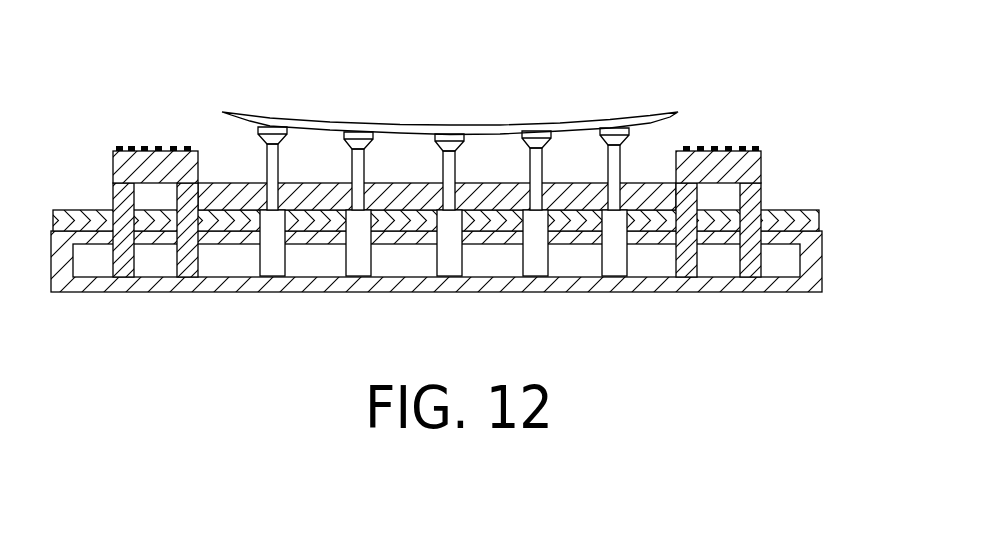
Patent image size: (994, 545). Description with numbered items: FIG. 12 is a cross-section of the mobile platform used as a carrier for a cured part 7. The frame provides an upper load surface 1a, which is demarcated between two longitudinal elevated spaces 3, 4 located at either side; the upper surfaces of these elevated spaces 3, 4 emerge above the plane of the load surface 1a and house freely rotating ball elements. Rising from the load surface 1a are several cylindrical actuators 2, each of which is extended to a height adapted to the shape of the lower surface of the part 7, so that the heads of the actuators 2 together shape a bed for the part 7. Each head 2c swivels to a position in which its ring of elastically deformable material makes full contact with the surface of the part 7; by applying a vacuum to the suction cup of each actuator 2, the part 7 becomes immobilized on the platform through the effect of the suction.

The upper load surface 1a is at (223, 182).
The cylindrical actuator 2 is at (433, 217).
The head 2c is at (442, 85).
The longitudinal elevated space 3 is at (112, 182).
The longitudinal elevated space 4 is at (747, 167).
The cured part 7 is at (678, 112).